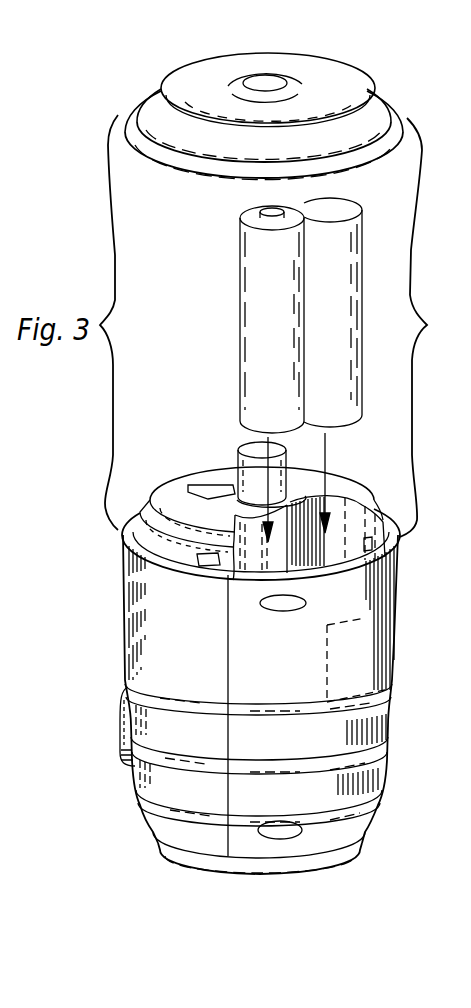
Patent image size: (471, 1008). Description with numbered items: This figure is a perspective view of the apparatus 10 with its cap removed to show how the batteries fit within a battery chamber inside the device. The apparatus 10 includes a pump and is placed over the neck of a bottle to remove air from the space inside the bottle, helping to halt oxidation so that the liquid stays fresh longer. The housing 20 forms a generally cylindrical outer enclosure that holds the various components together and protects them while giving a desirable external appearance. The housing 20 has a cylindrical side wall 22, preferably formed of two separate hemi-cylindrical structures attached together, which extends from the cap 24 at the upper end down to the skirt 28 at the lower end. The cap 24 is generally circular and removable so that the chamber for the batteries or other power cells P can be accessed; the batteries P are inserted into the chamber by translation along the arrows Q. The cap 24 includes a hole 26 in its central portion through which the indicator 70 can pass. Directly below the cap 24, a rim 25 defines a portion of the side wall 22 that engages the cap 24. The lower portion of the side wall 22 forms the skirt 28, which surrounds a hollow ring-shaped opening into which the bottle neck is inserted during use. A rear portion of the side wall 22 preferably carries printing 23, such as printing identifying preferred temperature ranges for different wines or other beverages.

The apparatus 10 is at (55, 742).
The housing 20 is at (235, 667).
The cylindrical side wall 22 is at (256, 683).
The printing 23 is at (367, 660).
The cap 24 is at (368, 93).
The rim 25 is at (123, 575).
The hole 26 is at (257, 78).
The skirt 28 is at (370, 817).
The indicator 70 is at (238, 458).
The batteries P is at (255, 303).
The arrows Q is at (275, 470).